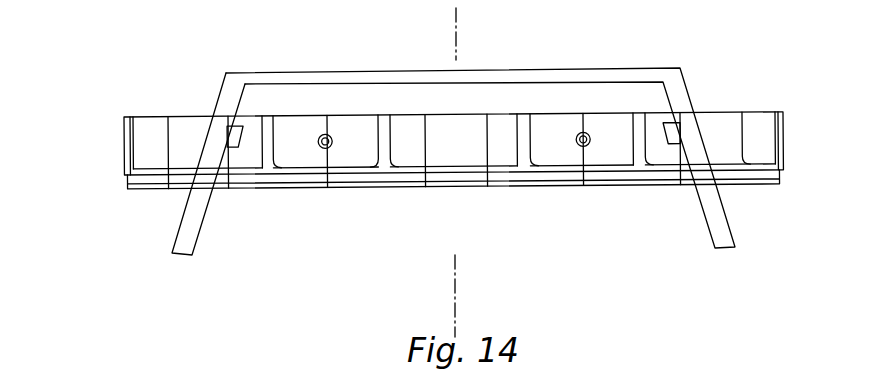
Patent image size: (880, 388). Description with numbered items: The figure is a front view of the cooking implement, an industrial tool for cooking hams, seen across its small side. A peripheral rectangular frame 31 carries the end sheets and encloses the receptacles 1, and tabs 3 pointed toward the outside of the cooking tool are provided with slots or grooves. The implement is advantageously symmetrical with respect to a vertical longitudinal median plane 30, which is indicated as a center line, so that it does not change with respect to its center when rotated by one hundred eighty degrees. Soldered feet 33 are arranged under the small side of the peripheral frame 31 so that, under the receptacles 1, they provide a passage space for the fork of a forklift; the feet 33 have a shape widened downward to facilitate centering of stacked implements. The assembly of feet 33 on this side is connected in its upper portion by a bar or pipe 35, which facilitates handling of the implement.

The receptacle 1 is at (347, 150).
The tab 3 is at (482, 143).
The vertical longitudinal median plane 30 is at (455, 275).
The peripheral frame 31 is at (123, 143).
The feet 33 is at (194, 232).
The bar or pipe 35 is at (456, 43).